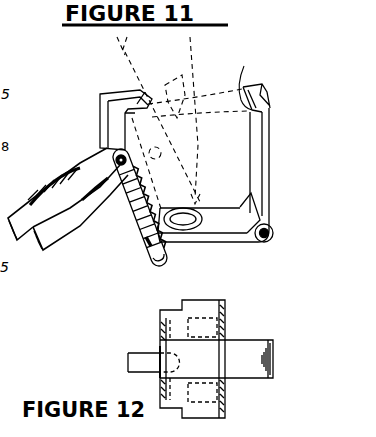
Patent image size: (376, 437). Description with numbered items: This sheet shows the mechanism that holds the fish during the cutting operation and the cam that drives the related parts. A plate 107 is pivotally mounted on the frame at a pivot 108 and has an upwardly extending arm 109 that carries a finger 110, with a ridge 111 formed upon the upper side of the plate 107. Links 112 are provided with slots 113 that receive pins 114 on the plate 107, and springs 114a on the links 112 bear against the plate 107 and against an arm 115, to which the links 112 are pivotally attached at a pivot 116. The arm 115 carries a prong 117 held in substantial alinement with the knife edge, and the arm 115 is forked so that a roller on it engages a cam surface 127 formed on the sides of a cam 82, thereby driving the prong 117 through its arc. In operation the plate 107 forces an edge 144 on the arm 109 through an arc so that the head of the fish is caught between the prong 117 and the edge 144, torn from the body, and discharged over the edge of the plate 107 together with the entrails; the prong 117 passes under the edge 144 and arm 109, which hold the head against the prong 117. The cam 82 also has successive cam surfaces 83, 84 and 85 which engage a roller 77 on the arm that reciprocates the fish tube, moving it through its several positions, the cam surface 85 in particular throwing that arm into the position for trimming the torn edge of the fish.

In FIG. 11, the prong 117 is at (130, 97).
In FIG. 11, the edge 144 is at (255, 85).
In FIG. 11, the finger 110 is at (264, 98).
In FIG. 11, the arm 109 is at (271, 158).
In FIG. 11, the pivot 108 is at (271, 235).
In FIG. 11, the plate 107 is at (208, 242).
In FIG. 11, the ridge 111 is at (200, 211).
In FIG. 11, the pins 114 is at (168, 248).
In FIG. 11, the springs 114a is at (135, 220).
In FIG. 11, the slots 113 is at (146, 242).
In FIG. 11, the links 112 is at (154, 259).
In FIG. 11, the pivot 116 is at (117, 157).
In FIG. 11, the arm 115 is at (58, 182).
In FIG. 12, the cam surface 84 is at (227, 340).
In FIG. 12, the cam surface 127 is at (160, 320).
In FIG. 12, the cam surface 83 is at (162, 350).
In FIG. 12, the cam 82 is at (217, 357).
In FIG. 12, the cam surface 85 is at (276, 350).
In FIG. 12, the roller 77 is at (128, 360).